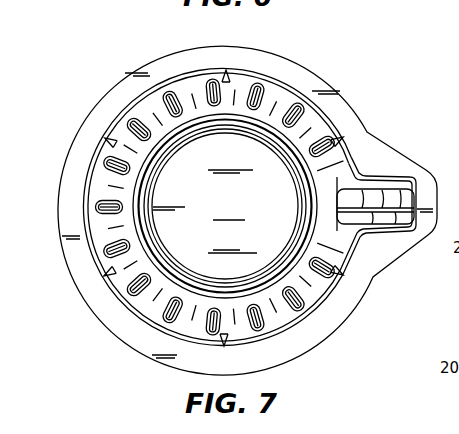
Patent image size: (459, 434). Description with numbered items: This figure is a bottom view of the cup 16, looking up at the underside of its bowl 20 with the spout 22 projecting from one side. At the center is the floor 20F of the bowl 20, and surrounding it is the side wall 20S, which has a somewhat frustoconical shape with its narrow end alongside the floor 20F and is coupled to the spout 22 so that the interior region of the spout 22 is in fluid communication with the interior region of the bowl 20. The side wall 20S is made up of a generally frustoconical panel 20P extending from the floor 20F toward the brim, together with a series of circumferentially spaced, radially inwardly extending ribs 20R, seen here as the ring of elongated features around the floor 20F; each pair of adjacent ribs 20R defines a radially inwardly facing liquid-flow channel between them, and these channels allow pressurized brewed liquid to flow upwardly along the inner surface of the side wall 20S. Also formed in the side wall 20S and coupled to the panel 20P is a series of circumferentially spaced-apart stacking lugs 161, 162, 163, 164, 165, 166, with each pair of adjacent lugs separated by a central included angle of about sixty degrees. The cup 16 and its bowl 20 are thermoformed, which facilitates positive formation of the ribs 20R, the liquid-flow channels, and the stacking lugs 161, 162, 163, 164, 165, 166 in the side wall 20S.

The cup 16 is at (341, 63).
The stacking lug 161 is at (225, 70).
The stacking lug 162 is at (343, 142).
The stacking lug 163 is at (341, 274).
The stacking lug 164 is at (230, 339).
The stacking lug 165 is at (107, 275).
The stacking lug 166 is at (114, 144).
The bowl 20 is at (198, 186).
The side wall 20S is at (135, 32).
The generally frustoconical panel 20P is at (153, 112).
The ribs 20R is at (112, 137).
The floor 20F is at (225, 206).
The spout 22 is at (394, 188).